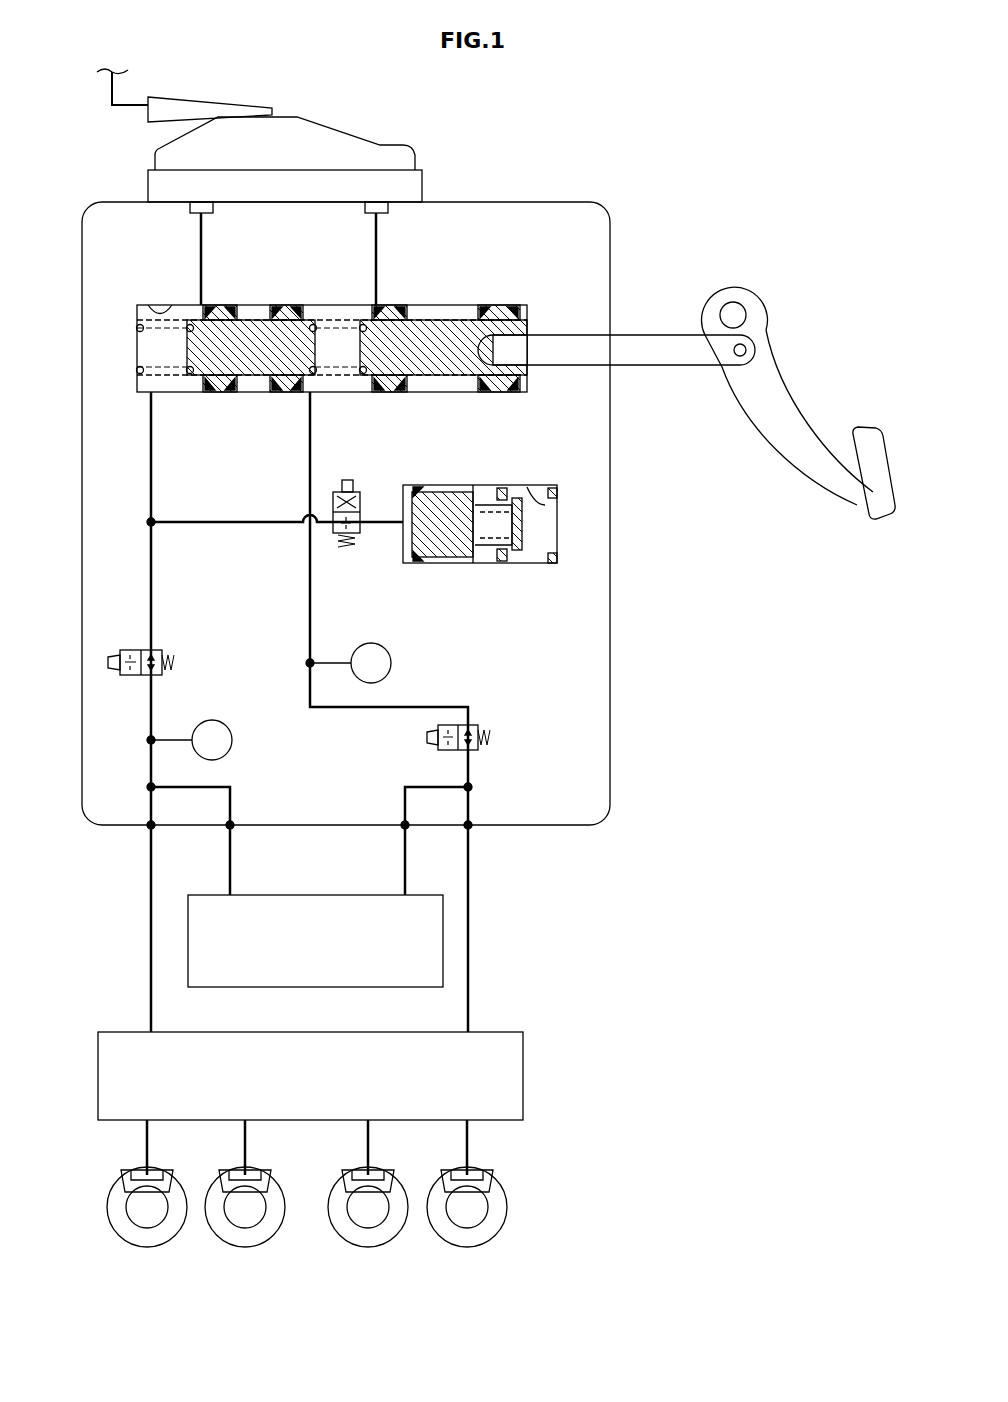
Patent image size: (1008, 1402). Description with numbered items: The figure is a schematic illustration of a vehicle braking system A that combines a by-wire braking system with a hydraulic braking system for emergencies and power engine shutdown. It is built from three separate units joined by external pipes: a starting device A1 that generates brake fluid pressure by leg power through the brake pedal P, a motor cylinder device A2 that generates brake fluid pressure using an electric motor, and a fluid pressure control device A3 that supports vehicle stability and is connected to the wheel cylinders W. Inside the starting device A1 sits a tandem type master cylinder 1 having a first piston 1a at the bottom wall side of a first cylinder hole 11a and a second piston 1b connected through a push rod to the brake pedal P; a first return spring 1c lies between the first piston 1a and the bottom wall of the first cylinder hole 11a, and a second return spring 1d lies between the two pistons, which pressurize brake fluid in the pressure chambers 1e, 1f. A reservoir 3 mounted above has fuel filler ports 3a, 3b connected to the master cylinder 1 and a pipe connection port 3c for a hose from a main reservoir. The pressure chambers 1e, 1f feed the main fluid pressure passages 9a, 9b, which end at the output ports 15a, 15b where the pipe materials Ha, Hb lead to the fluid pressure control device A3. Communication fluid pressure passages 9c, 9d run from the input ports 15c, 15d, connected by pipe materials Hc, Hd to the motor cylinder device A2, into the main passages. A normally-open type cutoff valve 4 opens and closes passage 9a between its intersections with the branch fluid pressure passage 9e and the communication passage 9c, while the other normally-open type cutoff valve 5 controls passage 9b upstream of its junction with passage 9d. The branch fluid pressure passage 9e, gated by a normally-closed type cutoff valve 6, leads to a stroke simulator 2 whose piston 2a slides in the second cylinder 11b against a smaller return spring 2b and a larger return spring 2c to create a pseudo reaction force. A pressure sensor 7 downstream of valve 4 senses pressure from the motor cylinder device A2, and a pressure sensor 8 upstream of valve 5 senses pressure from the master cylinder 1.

The tandem type master cylinder 1 is at (307, 343).
The first piston 1a is at (257, 352).
The second piston 1b is at (438, 346).
The first return spring 1c is at (180, 378).
The second return spring 1d is at (352, 378).
The pressure chamber 1e is at (170, 360).
The pressure chamber 1f is at (345, 360).
The first cylinder hole 11a is at (137, 308).
The second cylinder 11b is at (545, 505).
The stroke simulator 2 is at (506, 523).
The piston 2a is at (447, 540).
The smaller return spring 2b is at (484, 548).
The larger return spring 2c is at (532, 553).
The reservoir 3 is at (330, 118).
The fuel filler port 3a is at (190, 223).
The fuel filler port 3b is at (370, 220).
The pipe connection port 3c is at (187, 98).
The normally-open type cutoff valve 4 is at (163, 677).
The normally-open type cutoff valve 5 is at (480, 752).
The normally-closed type cutoff valve 6 is at (343, 534).
The pressure sensor 7 is at (191, 740).
The pressure sensor 8 is at (350, 663).
The main fluid pressure passage 9a is at (153, 580).
The main fluid pressure passage 9b is at (309, 618).
The communication fluid pressure passage 9c is at (215, 786).
The communication fluid pressure passage 9d is at (425, 786).
The branch fluid pressure passage 9e is at (277, 548).
The output port 15a is at (150, 822).
The output port 15b is at (470, 822).
The input port 15c is at (233, 822).
The input port 15d is at (405, 822).
The vehicle braking system A is at (380, 468).
The starting device A1 is at (613, 722).
The motor cylinder device A2 is at (331, 955).
The fluid pressure control device A3 is at (329, 1090).
The pipe material Ha is at (148, 862).
The pipe material Hb is at (470, 862).
The pipe material Hc is at (232, 862).
The pipe material Hd is at (404, 862).
The brake pedal P is at (872, 507).
The wheel cylinder W is at (152, 1170).